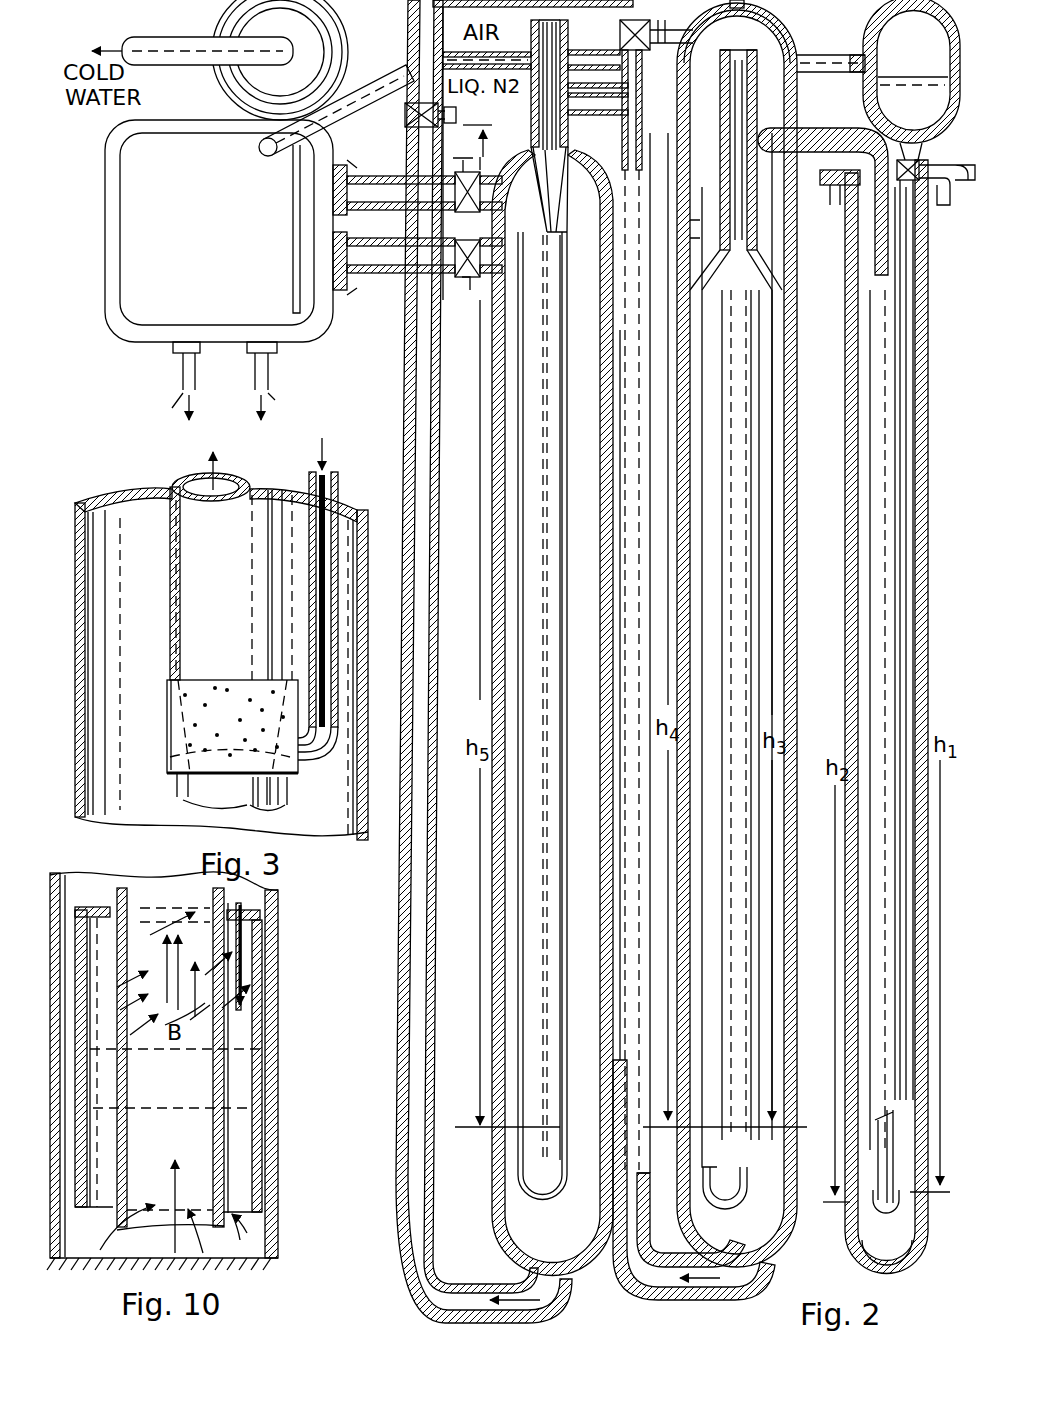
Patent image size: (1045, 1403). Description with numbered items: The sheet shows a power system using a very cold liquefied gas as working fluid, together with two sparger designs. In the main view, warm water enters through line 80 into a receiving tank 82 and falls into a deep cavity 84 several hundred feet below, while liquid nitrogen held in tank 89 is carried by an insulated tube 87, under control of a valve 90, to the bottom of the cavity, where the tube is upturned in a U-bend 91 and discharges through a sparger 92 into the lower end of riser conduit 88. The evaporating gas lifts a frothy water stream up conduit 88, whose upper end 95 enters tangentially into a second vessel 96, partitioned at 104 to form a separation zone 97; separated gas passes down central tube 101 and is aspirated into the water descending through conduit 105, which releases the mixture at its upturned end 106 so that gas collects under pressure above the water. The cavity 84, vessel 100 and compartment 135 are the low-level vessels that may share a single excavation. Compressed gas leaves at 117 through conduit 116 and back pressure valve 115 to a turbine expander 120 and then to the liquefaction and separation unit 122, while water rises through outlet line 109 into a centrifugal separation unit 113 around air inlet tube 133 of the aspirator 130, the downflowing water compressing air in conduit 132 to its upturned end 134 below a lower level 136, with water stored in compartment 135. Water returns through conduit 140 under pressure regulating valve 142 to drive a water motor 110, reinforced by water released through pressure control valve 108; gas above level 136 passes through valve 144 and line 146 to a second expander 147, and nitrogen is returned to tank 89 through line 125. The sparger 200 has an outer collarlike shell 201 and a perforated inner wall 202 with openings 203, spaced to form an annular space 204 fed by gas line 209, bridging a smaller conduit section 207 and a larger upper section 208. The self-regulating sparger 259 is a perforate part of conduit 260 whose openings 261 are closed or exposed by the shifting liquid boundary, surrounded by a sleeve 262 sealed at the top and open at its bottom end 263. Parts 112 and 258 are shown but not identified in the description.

In FIG. 2, the line 80 is at (945, 160).
In FIG. 2, the receiving tank 82 is at (828, 200).
In FIG. 2, the deep cavity 84 is at (848, 588).
In FIG. 2, the insulated tube 87 is at (908, 487).
In FIG. 2, the riser conduit 88 is at (845, 440).
In FIG. 2, the tank 89 is at (876, 24).
In FIG. 2, the valve 90 is at (922, 140).
In FIG. 2, the U-bend 91 is at (887, 1251).
In FIG. 2, the sparger 92 is at (860, 1210).
In FIG. 2, the upper end 95 is at (838, 126).
In FIG. 2, the second main shaft 96 is at (758, 18).
In FIG. 2, the separation zone 97 is at (742, 8).
In FIG. 2, the vessel 100 is at (785, 330).
In FIG. 2, the central tube 101 is at (829, 53).
In FIG. 2, the partition 104 is at (770, 258).
In FIG. 2, the downflow conduit 105 is at (780, 380).
In FIG. 2, the upturned end 106 is at (740, 1200).
In FIG. 2, the pressure control valve 108 is at (662, 85).
In FIG. 2, the outlet line 109 is at (613, 1270).
In FIG. 2, the water motor 110 is at (347, 45).
In FIG. 2, the injector tube 112 is at (572, 125).
In FIG. 2, the centrifugal separation unit 113 is at (495, 127).
In FIG. 2, the back pressure regulating valve 115 is at (472, 284).
In FIG. 2, the conduit 116 is at (682, 242).
In FIG. 2, the outlet 117 is at (705, 278).
In FIG. 2, the turbine expander 120 is at (352, 280).
In FIG. 2, the liquefaction and separation unit 122 is at (292, 337).
In FIG. 2, the line 125 is at (351, 95).
In FIG. 2, the aspirator 130 is at (580, 172).
In FIG. 2, the conduit 132 is at (566, 345).
In FIG. 2, the air inlet tube 133 is at (537, 23).
In FIG. 2, the upturned end 134 is at (515, 1165).
In FIG. 2, the compartment 135 is at (500, 1258).
In FIG. 2, the predetermined lower level 136 is at (485, 1125).
In FIG. 2, the conduit 140 is at (398, 409).
In FIG. 2, the pressure regulating valve 142 is at (458, 115).
In FIG. 2, the pressure regulating valve 144 is at (477, 172).
In FIG. 2, the line 146 is at (385, 162).
In FIG. 2, the second expander 147 is at (326, 140).
In FIG. 3, the sparger 200 is at (167, 725).
In FIG. 3, the outer collarlike shell 201 is at (163, 690).
In FIG. 3, the inner wall 202 is at (180, 766).
In FIG. 3, the openings 203 is at (225, 792).
In FIG. 3, the annular space 204 is at (182, 796).
In FIG. 3, the conduit section 207 is at (286, 795).
In FIG. 3, the upper section 208 is at (173, 553).
In FIG. 3, the line 209 is at (348, 482).
In FIG. 10, the outer tube 258 is at (280, 927).
In FIG. 10, the sparger 259 is at (233, 1012).
In FIG. 10, the conduit 260 is at (217, 1067).
In FIG. 10, the openings 261 is at (187, 928).
In FIG. 10, the sleeve 262 is at (285, 1033).
In FIG. 10, the bottom end 263 is at (256, 1238).